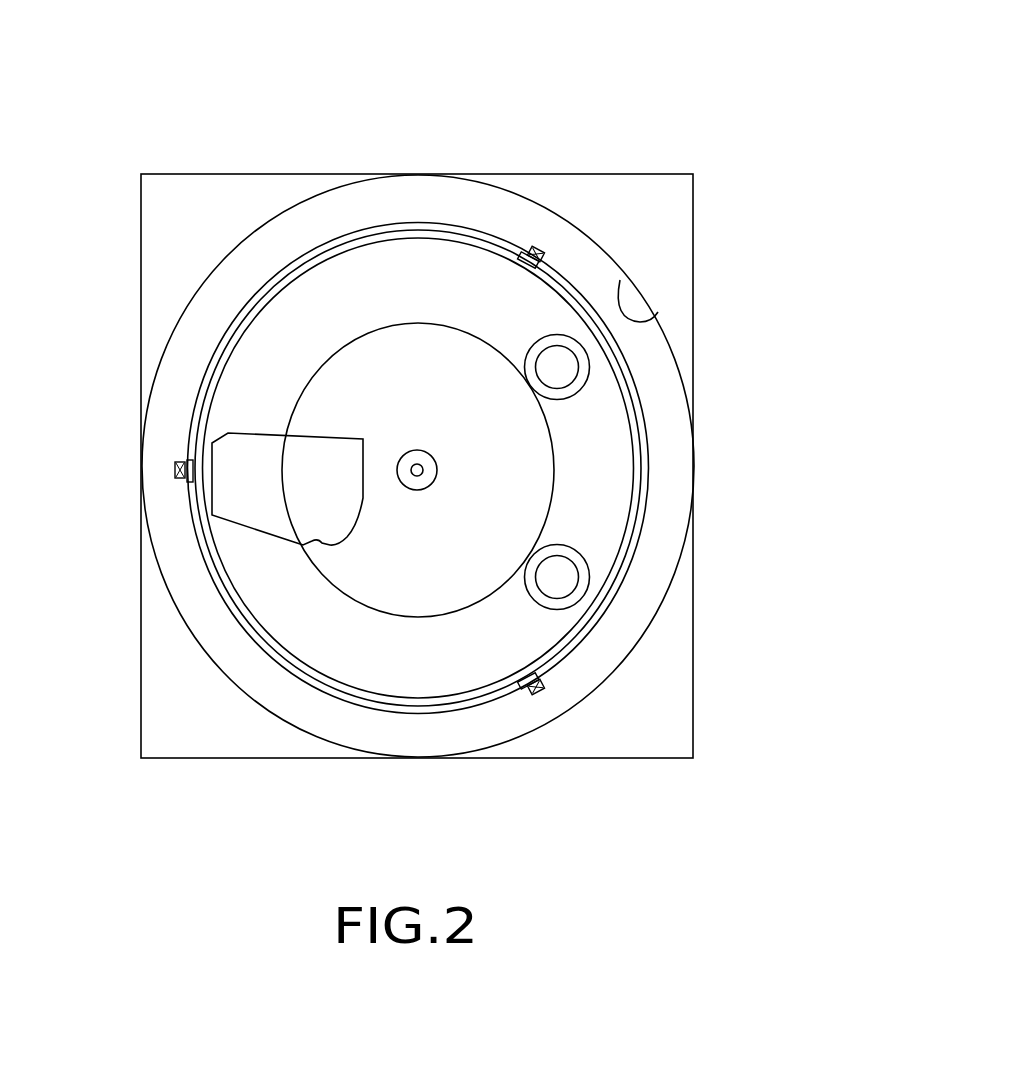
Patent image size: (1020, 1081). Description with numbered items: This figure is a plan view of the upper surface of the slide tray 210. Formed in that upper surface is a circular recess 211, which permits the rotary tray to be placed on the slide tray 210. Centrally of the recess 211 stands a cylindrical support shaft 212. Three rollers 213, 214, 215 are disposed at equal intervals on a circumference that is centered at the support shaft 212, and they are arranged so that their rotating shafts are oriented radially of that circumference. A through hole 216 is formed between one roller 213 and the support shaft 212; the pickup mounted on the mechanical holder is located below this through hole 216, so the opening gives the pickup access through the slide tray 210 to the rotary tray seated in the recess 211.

The slide tray 210 is at (625, 173).
The circular recess 211 is at (647, 323).
The cylindrical support shaft 212 is at (437, 467).
The roller 213 is at (177, 470).
The roller 214 is at (535, 248).
The roller 215 is at (540, 689).
The through hole 216 is at (212, 481).